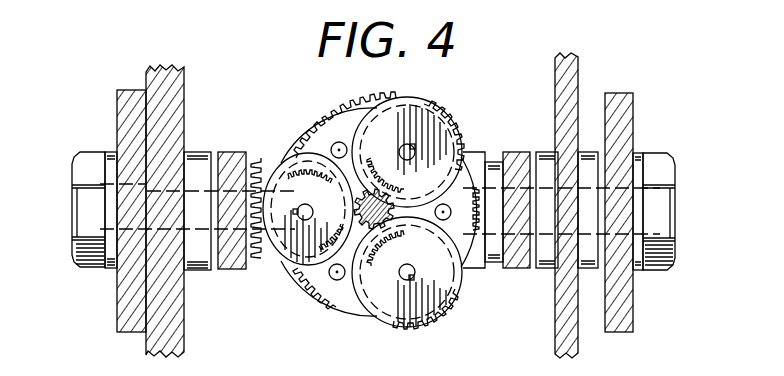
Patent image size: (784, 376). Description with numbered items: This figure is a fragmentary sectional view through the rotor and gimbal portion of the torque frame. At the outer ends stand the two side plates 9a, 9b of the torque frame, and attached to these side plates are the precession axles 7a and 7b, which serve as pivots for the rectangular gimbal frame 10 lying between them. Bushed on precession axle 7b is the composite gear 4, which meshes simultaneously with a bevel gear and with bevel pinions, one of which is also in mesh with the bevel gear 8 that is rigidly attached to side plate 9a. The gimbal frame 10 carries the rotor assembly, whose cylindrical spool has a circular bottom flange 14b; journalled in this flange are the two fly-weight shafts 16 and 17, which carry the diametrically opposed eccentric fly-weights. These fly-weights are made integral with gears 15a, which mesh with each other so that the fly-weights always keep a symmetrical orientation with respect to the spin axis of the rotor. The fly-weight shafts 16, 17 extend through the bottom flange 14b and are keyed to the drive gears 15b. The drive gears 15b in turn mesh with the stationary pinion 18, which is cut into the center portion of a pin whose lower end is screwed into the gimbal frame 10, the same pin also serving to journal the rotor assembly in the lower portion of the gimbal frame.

The composite gear 4 is at (577, 68).
The precession axle 7a is at (83, 207).
The precession axle 7b is at (667, 205).
The bevel gear 8 is at (163, 86).
The side plate 9a is at (128, 112).
The side plate 9b is at (622, 118).
The gimbal frame 10 is at (262, 270).
The bottom flange 14b is at (360, 113).
The gears 15a is at (320, 310).
The drive gears 15b is at (447, 112).
The fly-weight shaft 16 is at (333, 145).
The fly-weight shaft 17 is at (405, 280).
The stationary pinion 18 is at (356, 209).